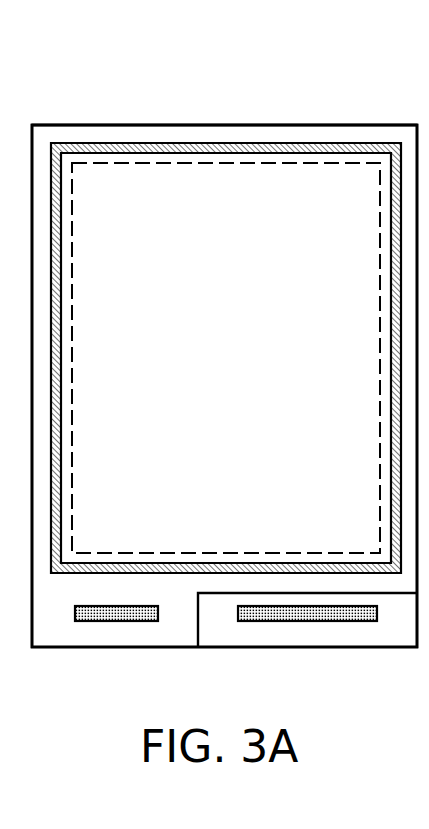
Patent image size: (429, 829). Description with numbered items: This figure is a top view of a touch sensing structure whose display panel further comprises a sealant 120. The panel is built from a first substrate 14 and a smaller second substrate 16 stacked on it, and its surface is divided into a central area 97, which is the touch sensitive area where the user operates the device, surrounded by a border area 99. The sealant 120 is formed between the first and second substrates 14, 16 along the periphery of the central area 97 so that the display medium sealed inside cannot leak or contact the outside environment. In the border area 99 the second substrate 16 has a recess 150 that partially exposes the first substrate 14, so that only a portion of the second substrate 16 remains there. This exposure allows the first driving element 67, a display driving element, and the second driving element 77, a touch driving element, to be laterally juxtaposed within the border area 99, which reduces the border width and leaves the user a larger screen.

The first substrate 14 is at (397, 636).
The second substrate 16 is at (362, 125).
The border area 99 is at (114, 133).
The sealant 120 is at (193, 143).
The central area 97 is at (280, 173).
The recess 150 is at (253, 648).
The second driving element 77 is at (113, 620).
The first driving element 67 is at (303, 621).